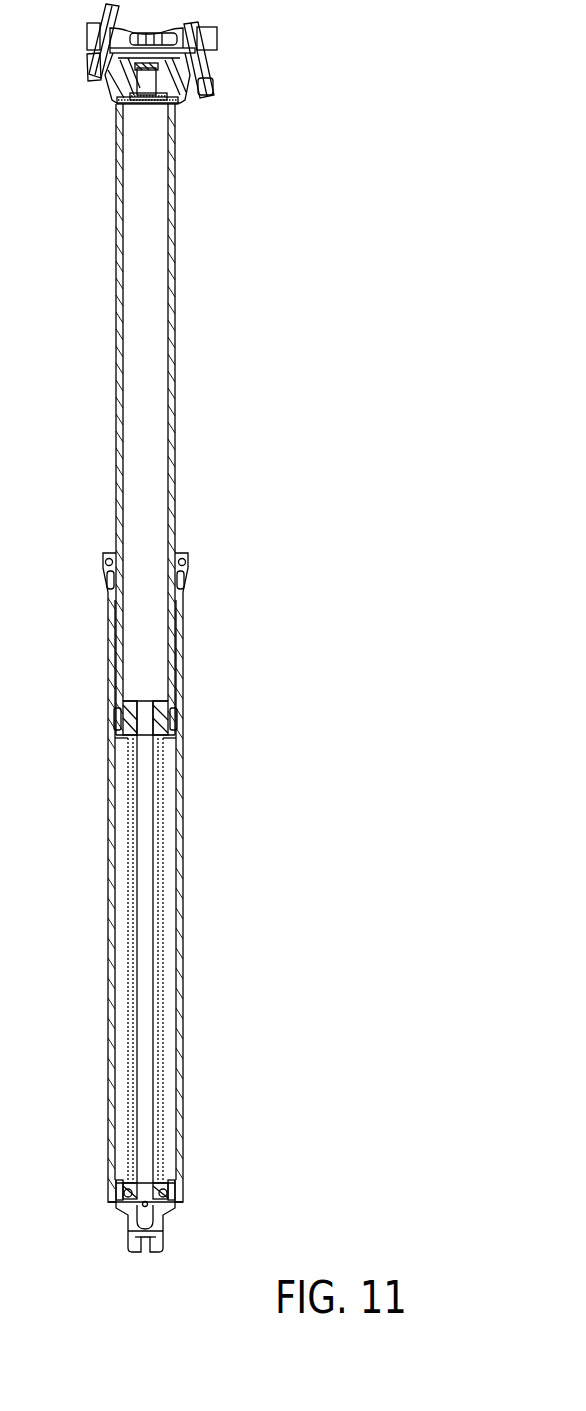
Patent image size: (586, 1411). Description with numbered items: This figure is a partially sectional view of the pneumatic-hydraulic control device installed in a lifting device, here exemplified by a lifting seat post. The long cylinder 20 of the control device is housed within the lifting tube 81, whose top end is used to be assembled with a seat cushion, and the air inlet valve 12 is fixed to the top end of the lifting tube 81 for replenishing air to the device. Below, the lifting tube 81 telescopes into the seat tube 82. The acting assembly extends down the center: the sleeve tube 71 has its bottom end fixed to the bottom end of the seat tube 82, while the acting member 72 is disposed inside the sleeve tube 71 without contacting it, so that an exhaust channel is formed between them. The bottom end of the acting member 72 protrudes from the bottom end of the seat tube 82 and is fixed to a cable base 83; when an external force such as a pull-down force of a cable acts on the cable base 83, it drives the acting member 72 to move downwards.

The air inlet valve 12 is at (147, 88).
The lifting tube 81 is at (172, 258).
The cylinder 20 is at (130, 402).
The seat tube 82 is at (180, 790).
The sleeve tube 71 is at (145, 1070).
The acting member 72 is at (166, 1193).
The cable base 83 is at (130, 1222).